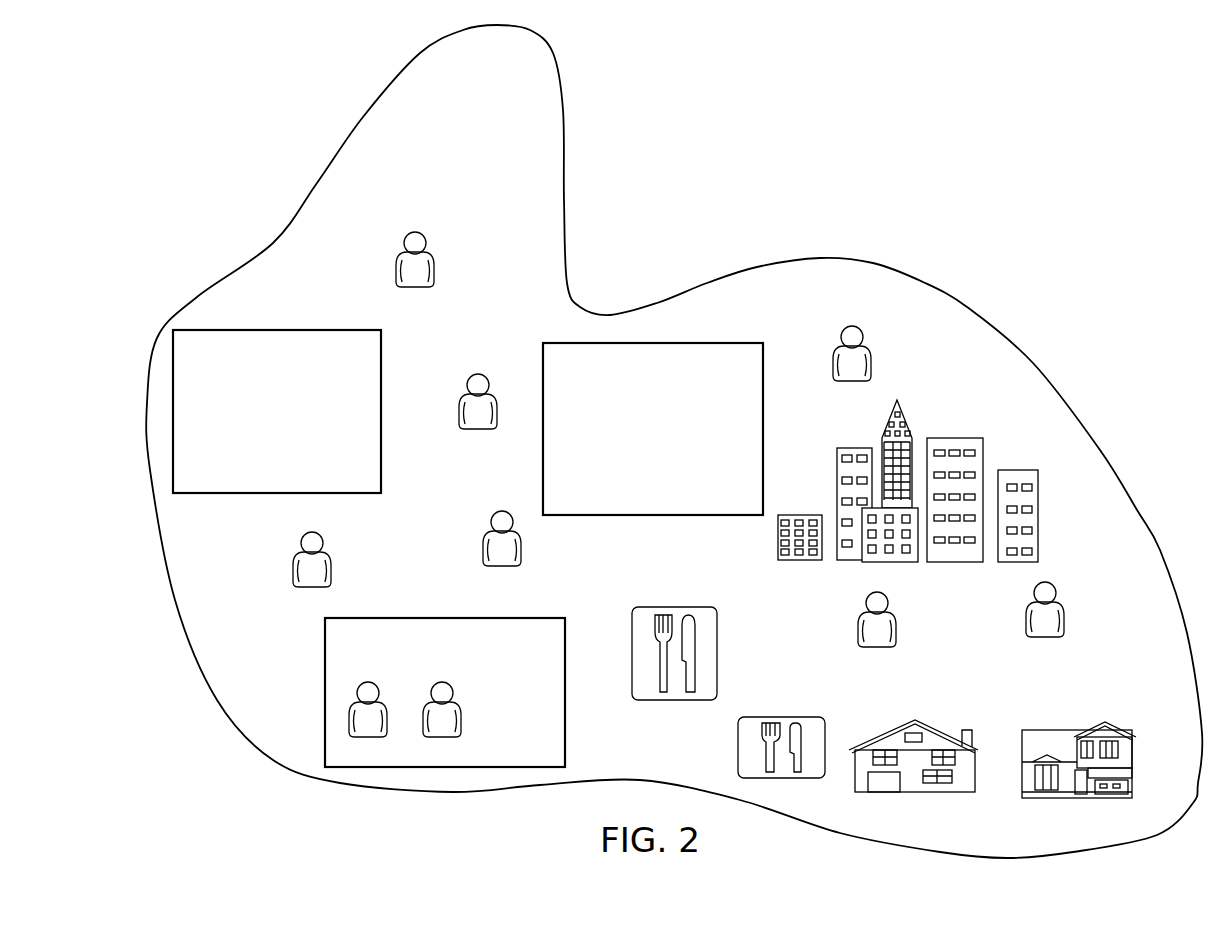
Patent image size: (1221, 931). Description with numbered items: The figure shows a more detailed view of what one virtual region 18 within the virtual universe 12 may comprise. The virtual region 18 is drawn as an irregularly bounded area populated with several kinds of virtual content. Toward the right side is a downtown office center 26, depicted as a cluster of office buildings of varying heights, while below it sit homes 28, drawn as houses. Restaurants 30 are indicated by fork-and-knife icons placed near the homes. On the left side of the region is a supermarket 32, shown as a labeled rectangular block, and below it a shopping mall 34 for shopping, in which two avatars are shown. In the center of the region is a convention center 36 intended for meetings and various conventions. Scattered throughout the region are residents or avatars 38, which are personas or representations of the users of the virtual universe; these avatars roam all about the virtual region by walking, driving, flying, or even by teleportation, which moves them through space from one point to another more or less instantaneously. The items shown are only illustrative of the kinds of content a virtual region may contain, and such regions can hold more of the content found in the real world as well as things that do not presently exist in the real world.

The virtual universe 12 is at (674, 441).
The virtual region 18 is at (566, 176).
The downtown office center 26 is at (972, 432).
The homes 28 is at (938, 728).
The restaurants 30 is at (698, 607).
The supermarket 32 is at (334, 330).
The shopping mall 34 is at (548, 618).
The convention center 36 is at (743, 343).
The avatars 38 is at (432, 260).